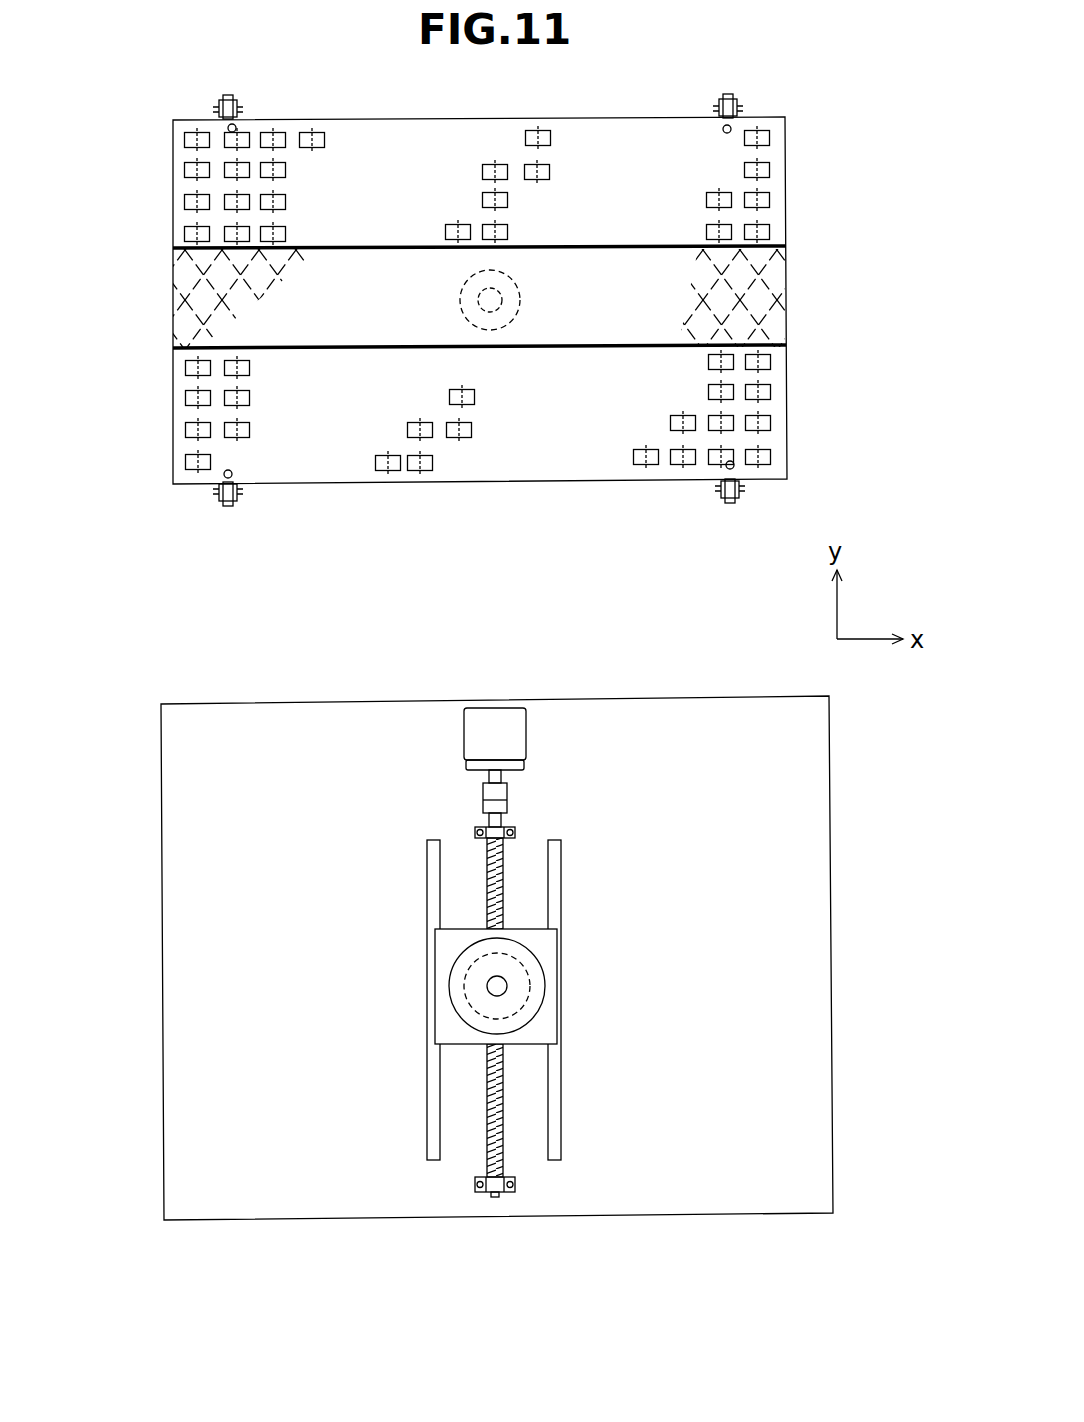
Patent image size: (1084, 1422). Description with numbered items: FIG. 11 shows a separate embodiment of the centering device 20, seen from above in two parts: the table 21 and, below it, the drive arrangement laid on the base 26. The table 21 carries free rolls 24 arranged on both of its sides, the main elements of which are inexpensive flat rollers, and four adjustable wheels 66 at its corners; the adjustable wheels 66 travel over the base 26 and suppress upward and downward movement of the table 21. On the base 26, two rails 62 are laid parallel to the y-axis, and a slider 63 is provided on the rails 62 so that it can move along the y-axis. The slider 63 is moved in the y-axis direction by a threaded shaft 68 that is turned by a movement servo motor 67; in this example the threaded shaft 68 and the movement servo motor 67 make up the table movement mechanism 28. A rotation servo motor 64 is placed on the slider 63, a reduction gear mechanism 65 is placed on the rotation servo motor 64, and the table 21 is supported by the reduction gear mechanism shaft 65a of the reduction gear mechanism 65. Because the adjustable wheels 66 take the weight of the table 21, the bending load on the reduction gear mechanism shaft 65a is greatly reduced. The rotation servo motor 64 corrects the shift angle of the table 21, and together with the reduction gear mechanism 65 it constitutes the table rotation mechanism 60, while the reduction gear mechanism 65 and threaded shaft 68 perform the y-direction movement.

The centering device 20 is at (355, 318).
The table 21 is at (150, 458).
The free rolls 24 is at (185, 169).
The base 26 is at (732, 1192).
The table movement mechanism 28 is at (562, 907).
The table rotation mechanism 60 is at (448, 953).
The rails 62 is at (432, 1162).
The slider 63 is at (547, 1028).
The rotation servo motor 64 is at (534, 998).
The reduction gear mechanism 65 is at (473, 980).
The reduction gear mechanism shaft 65a is at (487, 984).
The adjustable wheels 66 is at (230, 96).
The movement servo motor 67 is at (525, 733).
The threaded shaft 68 is at (503, 890).